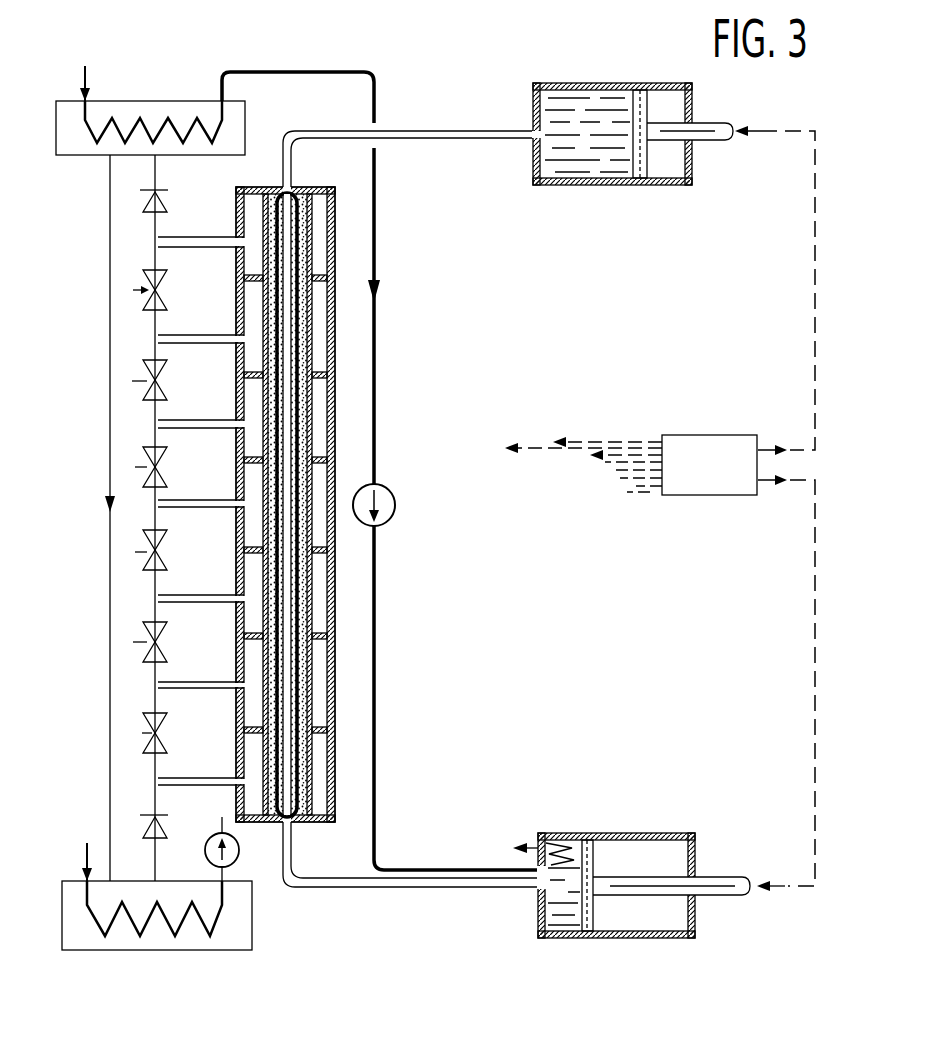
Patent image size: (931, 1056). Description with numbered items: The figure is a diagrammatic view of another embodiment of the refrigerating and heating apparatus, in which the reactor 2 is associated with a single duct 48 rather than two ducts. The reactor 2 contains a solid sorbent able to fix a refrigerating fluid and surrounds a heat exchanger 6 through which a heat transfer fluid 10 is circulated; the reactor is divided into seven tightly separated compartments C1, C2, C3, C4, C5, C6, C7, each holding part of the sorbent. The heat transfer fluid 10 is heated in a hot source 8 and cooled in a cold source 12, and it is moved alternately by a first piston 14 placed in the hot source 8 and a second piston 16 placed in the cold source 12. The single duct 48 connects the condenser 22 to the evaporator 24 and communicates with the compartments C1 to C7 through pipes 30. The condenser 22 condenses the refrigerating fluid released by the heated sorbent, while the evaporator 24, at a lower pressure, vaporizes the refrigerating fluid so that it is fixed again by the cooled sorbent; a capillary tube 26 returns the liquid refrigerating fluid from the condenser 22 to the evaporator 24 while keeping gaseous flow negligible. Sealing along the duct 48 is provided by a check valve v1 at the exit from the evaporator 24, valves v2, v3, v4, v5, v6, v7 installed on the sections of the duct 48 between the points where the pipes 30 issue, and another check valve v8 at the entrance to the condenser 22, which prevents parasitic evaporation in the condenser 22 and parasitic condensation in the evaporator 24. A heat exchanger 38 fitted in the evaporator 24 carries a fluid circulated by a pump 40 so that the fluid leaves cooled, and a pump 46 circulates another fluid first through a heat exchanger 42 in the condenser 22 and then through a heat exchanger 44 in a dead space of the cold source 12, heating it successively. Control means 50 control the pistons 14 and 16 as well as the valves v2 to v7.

The reactor 2 is at (345, 245).
The heat exchanger 6 is at (300, 810).
The hot source 8 is at (548, 185).
The heat transfer fluid 10 is at (598, 158).
The cold source 12 is at (558, 833).
The first piston 14 is at (645, 160).
The second piston 16 is at (593, 862).
The condenser 22 is at (70, 101).
The evaporator 24 is at (62, 903).
The capillary tube 26 is at (110, 432).
The pipes 30 is at (162, 352).
The heat exchanger 38 is at (220, 928).
The pump 40 is at (237, 857).
The heat exchanger 42 is at (187, 112).
The heat exchanger 44 is at (538, 850).
The pump 46 is at (395, 506).
The single duct 48 is at (152, 519).
The control means 50 is at (698, 482).
The compartment C1 is at (326, 768).
The compartment C2 is at (326, 677).
The compartment C3 is at (326, 592).
The compartment C4 is at (325, 490).
The compartment C5 is at (326, 415).
The compartment C6 is at (326, 330).
The compartment C7 is at (326, 210).
The check valve v1 is at (147, 816).
The valve v2 is at (149, 717).
The valve v3 is at (147, 653).
The valve v4 is at (148, 572).
The valve v5 is at (158, 452).
The valve v6 is at (162, 368).
The valve v7 is at (140, 302).
The check valve v8 is at (141, 207).